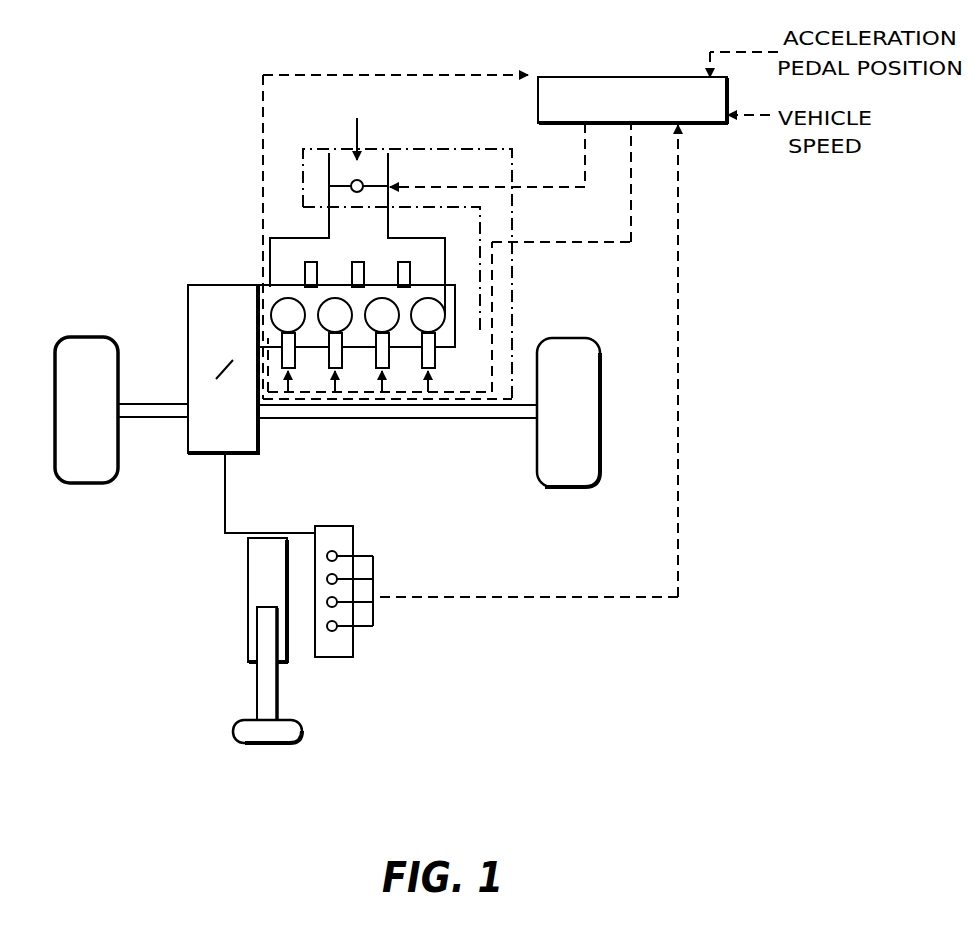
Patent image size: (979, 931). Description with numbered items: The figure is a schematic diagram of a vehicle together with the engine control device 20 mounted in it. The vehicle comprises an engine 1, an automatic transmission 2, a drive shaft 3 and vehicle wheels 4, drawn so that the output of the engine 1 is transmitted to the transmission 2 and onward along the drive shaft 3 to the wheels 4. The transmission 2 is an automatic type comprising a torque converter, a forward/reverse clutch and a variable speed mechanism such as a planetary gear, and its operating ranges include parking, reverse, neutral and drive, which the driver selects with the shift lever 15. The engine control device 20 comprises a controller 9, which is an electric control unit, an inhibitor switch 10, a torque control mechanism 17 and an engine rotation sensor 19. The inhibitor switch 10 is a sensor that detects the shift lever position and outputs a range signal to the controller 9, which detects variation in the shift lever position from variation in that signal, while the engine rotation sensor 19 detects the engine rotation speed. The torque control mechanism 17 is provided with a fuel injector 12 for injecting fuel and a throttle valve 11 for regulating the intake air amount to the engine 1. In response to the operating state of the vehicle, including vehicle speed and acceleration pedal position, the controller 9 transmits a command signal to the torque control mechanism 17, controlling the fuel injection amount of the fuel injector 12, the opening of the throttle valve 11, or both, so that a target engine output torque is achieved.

The engine 1 is at (461, 303).
The transmission 2 is at (218, 282).
The drive shaft 3 is at (414, 420).
The vehicle wheels 4 is at (580, 488).
The controller 9 is at (585, 77).
The inhibitor switch 10 is at (330, 525).
The throttle valve 11 is at (329, 185).
The fuel injector 12 is at (435, 364).
The shift lever 15 is at (251, 604).
The torque control mechanism 17 is at (418, 147).
The engine rotation sensor 19 is at (248, 284).
The engine control device 20 is at (697, 215).